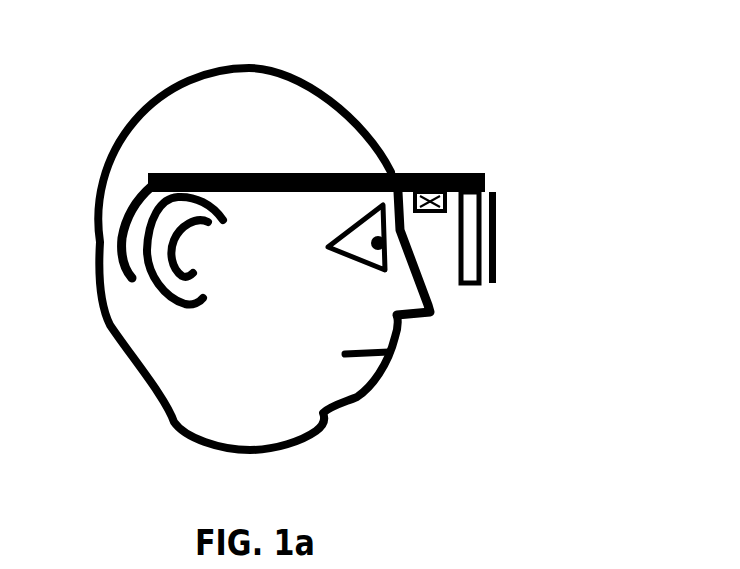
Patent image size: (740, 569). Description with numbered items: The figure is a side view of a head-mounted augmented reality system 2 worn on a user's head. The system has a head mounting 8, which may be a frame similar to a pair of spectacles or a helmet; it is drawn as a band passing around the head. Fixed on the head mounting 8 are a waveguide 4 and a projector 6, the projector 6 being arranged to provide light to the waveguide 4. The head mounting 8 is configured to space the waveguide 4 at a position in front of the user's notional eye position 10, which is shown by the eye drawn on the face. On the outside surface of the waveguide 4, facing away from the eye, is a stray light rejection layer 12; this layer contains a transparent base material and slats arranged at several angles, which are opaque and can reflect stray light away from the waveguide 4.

The head-mounted augmented reality system 2 is at (401, 174).
The waveguide 4 is at (480, 287).
The projector 6 is at (442, 174).
The head mounting 8 is at (152, 178).
The user's notional eye position 10 is at (380, 262).
The stray light rejection layer 12 is at (492, 235).